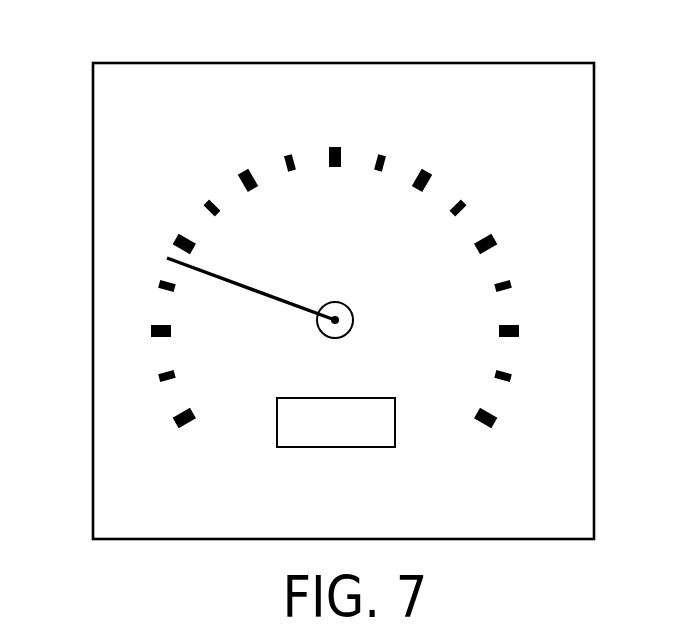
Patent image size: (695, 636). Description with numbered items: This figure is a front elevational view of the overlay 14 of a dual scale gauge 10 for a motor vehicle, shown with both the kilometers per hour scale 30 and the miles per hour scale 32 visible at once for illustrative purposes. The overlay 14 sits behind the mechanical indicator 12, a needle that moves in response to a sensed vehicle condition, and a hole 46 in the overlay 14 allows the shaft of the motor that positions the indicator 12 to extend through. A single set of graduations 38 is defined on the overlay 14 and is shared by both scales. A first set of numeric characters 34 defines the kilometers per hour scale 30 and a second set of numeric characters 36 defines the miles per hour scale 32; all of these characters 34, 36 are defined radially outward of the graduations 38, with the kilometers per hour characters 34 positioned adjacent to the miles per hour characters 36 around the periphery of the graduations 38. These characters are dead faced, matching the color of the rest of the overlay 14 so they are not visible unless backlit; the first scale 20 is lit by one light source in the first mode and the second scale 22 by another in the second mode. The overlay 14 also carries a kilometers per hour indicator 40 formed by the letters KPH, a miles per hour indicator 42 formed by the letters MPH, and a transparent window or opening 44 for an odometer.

The dual scale gauge 10 is at (343, 41).
The mechanical indicator 12 is at (222, 277).
The overlay 14 is at (180, 83).
The first scale 20 is at (100, 360).
The second scale 22 is at (102, 312).
The kilometers per hour scale 30 is at (517, 480).
The miles per hour scale 32 is at (552, 423).
The first set of numeric characters 34 is at (480, 145).
The second set of numeric characters 36 is at (442, 120).
The set of graduations 38 is at (193, 430).
The kilometers per hour indicator 40 is at (382, 470).
The miles per hour indicator 42 is at (382, 378).
The opening 44 is at (365, 433).
The hole 46 is at (342, 314).